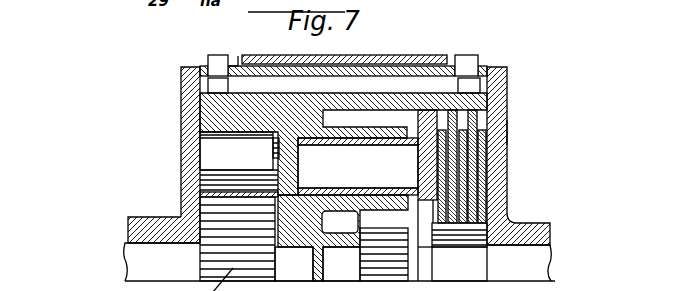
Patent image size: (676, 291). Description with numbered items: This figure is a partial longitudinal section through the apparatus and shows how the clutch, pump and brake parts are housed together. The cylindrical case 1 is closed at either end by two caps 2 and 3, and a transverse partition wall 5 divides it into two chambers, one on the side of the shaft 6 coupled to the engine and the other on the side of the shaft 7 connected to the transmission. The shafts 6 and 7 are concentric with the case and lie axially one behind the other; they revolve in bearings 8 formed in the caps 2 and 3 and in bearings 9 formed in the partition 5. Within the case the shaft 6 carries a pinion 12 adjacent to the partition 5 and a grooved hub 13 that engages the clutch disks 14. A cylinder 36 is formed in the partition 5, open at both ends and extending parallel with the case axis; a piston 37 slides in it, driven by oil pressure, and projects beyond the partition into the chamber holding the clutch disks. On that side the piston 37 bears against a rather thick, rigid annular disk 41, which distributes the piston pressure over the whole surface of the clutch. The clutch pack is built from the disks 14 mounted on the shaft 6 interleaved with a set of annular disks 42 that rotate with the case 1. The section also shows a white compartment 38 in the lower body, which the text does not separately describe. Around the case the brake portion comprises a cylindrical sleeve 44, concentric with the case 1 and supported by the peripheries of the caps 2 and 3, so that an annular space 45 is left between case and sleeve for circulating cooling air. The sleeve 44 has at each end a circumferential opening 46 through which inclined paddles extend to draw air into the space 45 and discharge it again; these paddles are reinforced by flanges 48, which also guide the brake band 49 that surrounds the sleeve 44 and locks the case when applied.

The cylindrical case 1 is at (365, 95).
The cap 2 is at (503, 75).
The cap 3 is at (185, 89).
The transverse partition wall 5 is at (313, 220).
The shaft 6 is at (538, 257).
The shaft 7 is at (137, 262).
The bearings 8 is at (152, 215).
The bearings 9 is at (317, 264).
The pinion 12 is at (378, 228).
The grooved hub 13 is at (465, 238).
The clutch disks 14 is at (458, 178).
The cylinder 36 is at (228, 196).
The piston 37 is at (358, 166).
The cell compartment 38 is at (228, 152).
The annular disk 41 is at (507, 133).
The annular disks 42 is at (475, 118).
The cylindrical sleeve 44 is at (418, 70).
The annular space 45 is at (470, 56).
The circumferential opening 46 is at (216, 56).
The flanges 48 is at (237, 57).
The brake band 49 is at (285, 52).